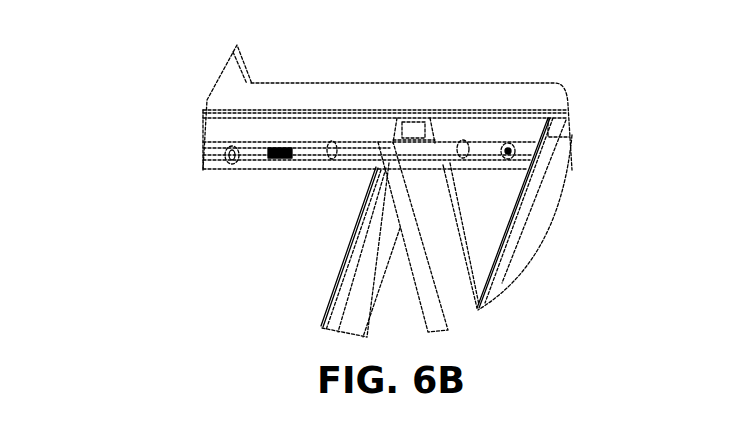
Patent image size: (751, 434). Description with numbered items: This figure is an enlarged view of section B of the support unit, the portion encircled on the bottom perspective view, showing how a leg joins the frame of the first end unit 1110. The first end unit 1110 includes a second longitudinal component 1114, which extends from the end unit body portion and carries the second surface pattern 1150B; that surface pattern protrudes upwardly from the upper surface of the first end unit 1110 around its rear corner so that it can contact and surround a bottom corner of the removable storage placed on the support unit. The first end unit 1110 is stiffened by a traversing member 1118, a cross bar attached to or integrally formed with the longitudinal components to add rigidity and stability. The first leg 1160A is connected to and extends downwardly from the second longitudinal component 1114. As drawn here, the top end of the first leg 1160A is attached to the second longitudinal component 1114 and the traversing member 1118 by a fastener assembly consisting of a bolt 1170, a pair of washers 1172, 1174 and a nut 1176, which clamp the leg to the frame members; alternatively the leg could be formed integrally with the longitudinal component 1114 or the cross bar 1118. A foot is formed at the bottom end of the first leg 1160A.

The section B is at (207, 100).
The second surface pattern 1150B is at (233, 70).
The first end unit 1110 is at (217, 130).
The second longitudinal component 1114 is at (463, 95).
The traversing member 1118 is at (353, 265).
The first leg 1160A is at (443, 257).
The bolt 1170 is at (247, 153).
The washer 1172 is at (330, 143).
The washer 1174 is at (470, 158).
The nut 1176 is at (510, 150).